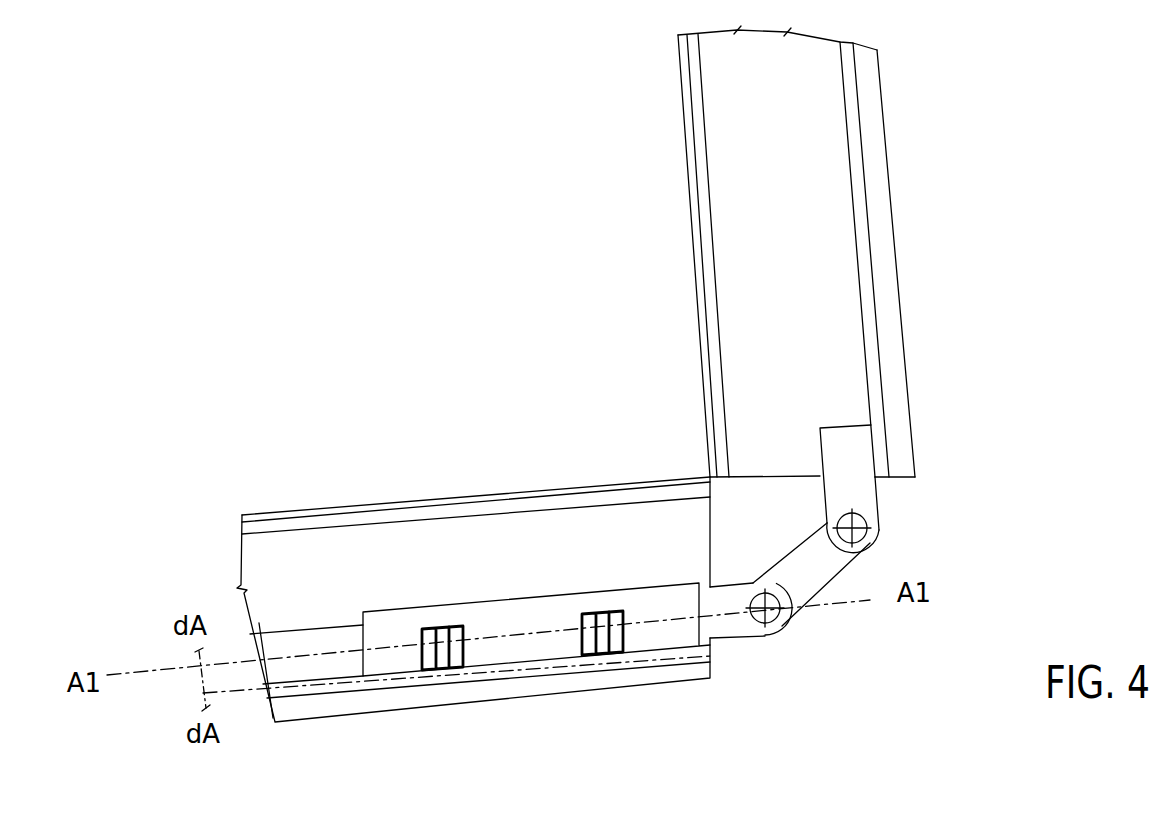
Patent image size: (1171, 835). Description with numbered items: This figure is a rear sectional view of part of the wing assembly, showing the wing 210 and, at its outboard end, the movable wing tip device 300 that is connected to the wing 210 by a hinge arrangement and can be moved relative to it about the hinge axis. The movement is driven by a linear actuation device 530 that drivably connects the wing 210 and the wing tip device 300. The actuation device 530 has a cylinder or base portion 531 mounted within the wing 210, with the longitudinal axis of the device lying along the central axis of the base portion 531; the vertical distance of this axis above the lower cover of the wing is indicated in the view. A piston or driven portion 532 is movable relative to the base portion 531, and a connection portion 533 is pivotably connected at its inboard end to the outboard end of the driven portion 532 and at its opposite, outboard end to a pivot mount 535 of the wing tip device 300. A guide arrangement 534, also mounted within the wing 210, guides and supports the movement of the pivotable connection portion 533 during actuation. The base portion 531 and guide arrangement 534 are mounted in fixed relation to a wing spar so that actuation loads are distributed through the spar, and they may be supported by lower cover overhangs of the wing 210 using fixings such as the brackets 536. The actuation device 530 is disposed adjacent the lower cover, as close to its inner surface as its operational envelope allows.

The wing tip device 300 is at (749, 140).
The wing 210 is at (323, 583).
The second linear actuation device 530 is at (893, 654).
The base portion 531 is at (313, 667).
The driven portion 532 is at (735, 625).
The connection portion 533 is at (805, 570).
The guide arrangement 534 is at (495, 642).
The pivot mount 535 is at (855, 493).
The brackets 536 is at (440, 670).